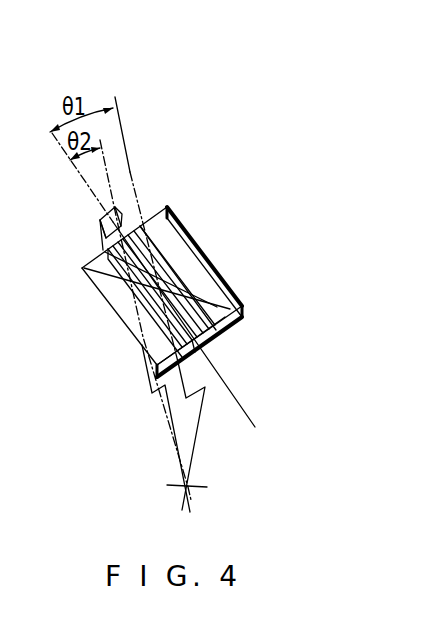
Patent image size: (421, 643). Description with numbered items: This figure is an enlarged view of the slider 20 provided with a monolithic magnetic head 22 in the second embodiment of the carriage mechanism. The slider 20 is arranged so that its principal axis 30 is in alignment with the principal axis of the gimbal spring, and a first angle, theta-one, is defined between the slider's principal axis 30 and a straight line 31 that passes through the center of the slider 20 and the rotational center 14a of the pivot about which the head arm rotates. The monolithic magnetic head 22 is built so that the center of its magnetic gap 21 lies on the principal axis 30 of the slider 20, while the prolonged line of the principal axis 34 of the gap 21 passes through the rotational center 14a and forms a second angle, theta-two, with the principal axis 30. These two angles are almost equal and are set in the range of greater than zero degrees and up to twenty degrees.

The slider 20 is at (199, 247).
The magnetic gap 21 is at (108, 232).
The magnetic head 22 is at (86, 220).
The principal axis 30 is at (79, 172).
The straight line 31 is at (127, 145).
The principal axis of gap 34 is at (152, 388).
The rotational center 14a is at (188, 489).